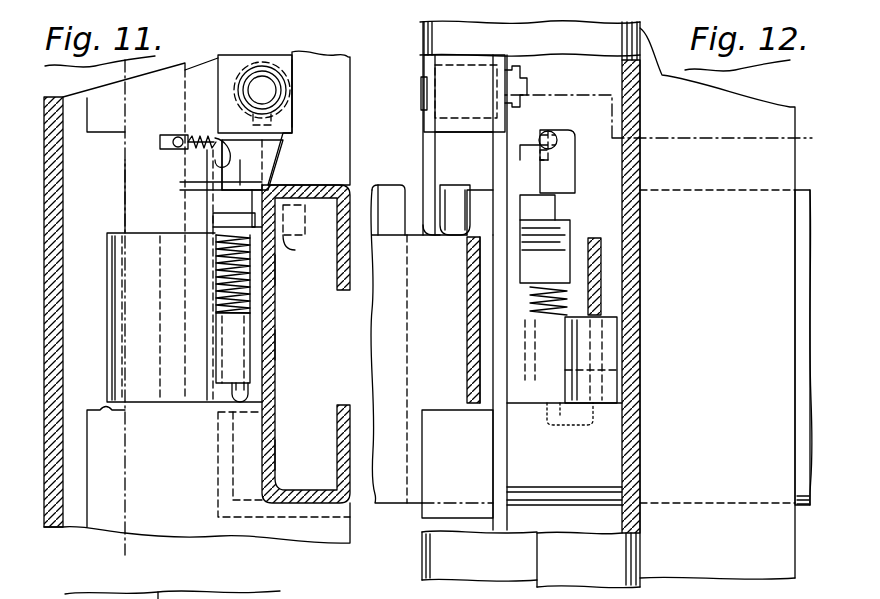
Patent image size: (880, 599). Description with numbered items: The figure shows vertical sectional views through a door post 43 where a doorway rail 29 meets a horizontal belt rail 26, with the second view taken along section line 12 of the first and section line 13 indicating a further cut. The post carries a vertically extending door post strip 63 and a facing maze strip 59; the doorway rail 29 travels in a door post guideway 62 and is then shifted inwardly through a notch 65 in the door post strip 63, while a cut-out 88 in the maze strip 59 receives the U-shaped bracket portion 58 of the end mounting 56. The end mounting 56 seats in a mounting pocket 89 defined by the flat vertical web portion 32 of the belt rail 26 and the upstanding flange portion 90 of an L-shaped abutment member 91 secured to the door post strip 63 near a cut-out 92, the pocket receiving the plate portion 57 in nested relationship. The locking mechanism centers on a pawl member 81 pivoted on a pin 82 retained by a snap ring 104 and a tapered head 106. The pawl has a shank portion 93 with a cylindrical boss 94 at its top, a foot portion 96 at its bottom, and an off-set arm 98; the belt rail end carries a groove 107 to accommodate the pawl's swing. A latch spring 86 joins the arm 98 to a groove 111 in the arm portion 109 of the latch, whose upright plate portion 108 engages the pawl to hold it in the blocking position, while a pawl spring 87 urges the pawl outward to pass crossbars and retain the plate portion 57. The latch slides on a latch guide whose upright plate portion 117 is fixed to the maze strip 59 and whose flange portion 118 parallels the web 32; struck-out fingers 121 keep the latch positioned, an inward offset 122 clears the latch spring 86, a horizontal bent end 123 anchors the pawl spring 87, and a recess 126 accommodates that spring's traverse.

In FIG. 11, the section line 12— 12 is at (148, 22).
In FIG. 12, the section line 13— 13 is at (405, 95).
In FIG. 11, the belt rail 26 is at (270, 290).
In FIG. 12, the belt rail 26 is at (714, 186).
In FIG. 12, the doorway rail 29 is at (419, 317).
In FIG. 11, the flat vertical web portion 32 is at (272, 346).
In FIG. 11, the door post 43 is at (52, 228).
In FIG. 12, the door post 43 is at (642, 265).
In FIG. 11, the end mounting 56 is at (108, 298).
In FIG. 12, the plate portion 57 is at (445, 328).
In FIG. 12, the U-shaped bracket portion 58 is at (466, 300).
In FIG. 11, the maze strip 59 is at (88, 425).
In FIG. 12, the maze strip 59 is at (500, 476).
In FIG. 11, the door post guideway 62 is at (75, 118).
In FIG. 11, the door post strip 63 is at (328, 65).
In FIG. 12, the door post strip 63 is at (420, 25).
In FIG. 11, the notch 65 is at (216, 138).
In FIG. 11, the pawl member 81 is at (278, 160).
In FIG. 12, the pawl member 81 is at (476, 163).
In FIG. 11, the pin 82 is at (262, 88).
In FIG. 12, the pin 82 is at (453, 95).
In FIG. 11, the latch spring 86 is at (215, 276).
In FIG. 12, the latch spring 86 is at (557, 218).
In FIG. 11, the pawl spring 87 is at (206, 138).
In FIG. 12, the pawl spring 87 is at (552, 132).
In FIG. 11, the cut-out 88 is at (124, 165).
In FIG. 12, the cut-out 88 is at (508, 404).
In FIG. 11, the mounting pocket 89 is at (245, 450).
In FIG. 12, the upstanding flange portion 90 is at (446, 418).
In FIG. 11, the L-shaped abutment member 91 is at (240, 424).
In FIG. 12, the L-shaped abutment member 91 is at (422, 505).
In FIG. 11, the cut-out 92 is at (340, 513).
In FIG. 12, the cut-out 92 is at (425, 190).
In FIG. 11, the shank portion 93 is at (268, 170).
In FIG. 12, the cylindrical boss 94 is at (475, 62).
In FIG. 11, the foot portion 96 is at (288, 270).
In FIG. 12, the foot portion 96 is at (468, 245).
In FIG. 11, the off-set arm 98 is at (268, 178).
In FIG. 11, the snap ring 104 is at (290, 100).
In FIG. 12, the snap ring 104 is at (518, 78).
In FIG. 12, the tapered head 106 is at (420, 95).
In FIG. 11, the groove 107 is at (300, 235).
In FIG. 12, the groove 107 is at (452, 218).
In FIG. 11, the upright plate portion 108 is at (212, 222).
In FIG. 11, the arm portion 109 is at (240, 386).
In FIG. 12, the arm portion 109 is at (592, 408).
In FIG. 12, the groove 111 is at (562, 416).
In FIG. 11, the upright plate portion 117 is at (170, 194).
In FIG. 12, the upright plate portion 117 is at (507, 270).
In FIG. 11, the flange portion 118 is at (215, 342).
In FIG. 12, the flange portion 118 is at (568, 173).
In FIG. 11, the struck-out fingers 121 is at (200, 196).
In FIG. 12, the struck-out fingers 121 is at (548, 205).
In FIG. 12, the inward offset 122 is at (572, 378).
In FIG. 11, the horizontal bent end 123 is at (162, 141).
In FIG. 12, the horizontal bent end 123 is at (524, 142).
In FIG. 11, the recess 126 is at (200, 172).
In FIG. 12, the recess 126 is at (570, 155).